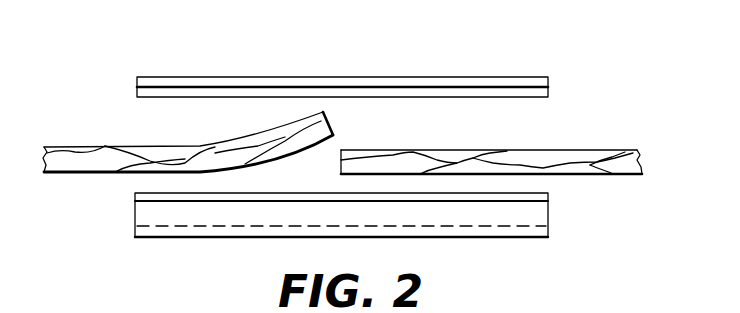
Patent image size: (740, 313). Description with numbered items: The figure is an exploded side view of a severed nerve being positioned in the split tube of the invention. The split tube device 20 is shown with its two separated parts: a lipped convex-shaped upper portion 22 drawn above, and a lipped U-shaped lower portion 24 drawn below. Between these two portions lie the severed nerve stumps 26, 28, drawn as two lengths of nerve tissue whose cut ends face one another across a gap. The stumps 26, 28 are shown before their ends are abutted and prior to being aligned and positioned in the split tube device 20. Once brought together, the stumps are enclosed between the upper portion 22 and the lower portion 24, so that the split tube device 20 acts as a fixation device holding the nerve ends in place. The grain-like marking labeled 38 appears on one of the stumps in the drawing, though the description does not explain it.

The split tube device 20 is at (572, 83).
The lipped convex-shaped upper portion 22 is at (513, 77).
The lipped U-shaped lower portion 24 is at (527, 240).
The severed nerve stump 26 is at (612, 175).
The severed nerve stump 28 is at (61, 147).
The grain pattern 38 is at (617, 155).